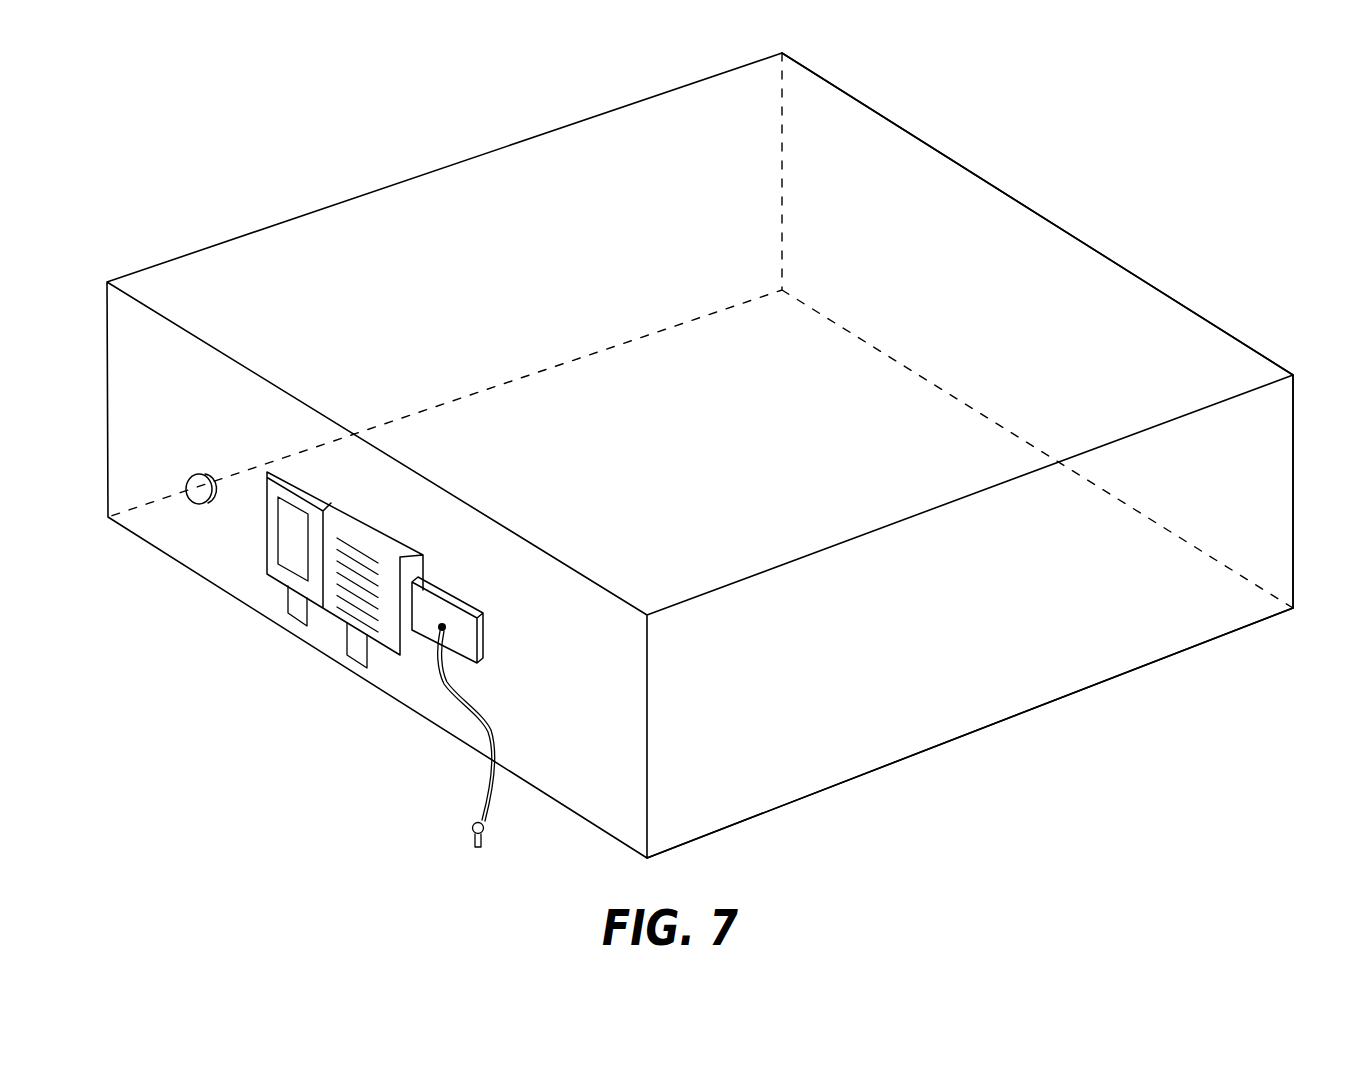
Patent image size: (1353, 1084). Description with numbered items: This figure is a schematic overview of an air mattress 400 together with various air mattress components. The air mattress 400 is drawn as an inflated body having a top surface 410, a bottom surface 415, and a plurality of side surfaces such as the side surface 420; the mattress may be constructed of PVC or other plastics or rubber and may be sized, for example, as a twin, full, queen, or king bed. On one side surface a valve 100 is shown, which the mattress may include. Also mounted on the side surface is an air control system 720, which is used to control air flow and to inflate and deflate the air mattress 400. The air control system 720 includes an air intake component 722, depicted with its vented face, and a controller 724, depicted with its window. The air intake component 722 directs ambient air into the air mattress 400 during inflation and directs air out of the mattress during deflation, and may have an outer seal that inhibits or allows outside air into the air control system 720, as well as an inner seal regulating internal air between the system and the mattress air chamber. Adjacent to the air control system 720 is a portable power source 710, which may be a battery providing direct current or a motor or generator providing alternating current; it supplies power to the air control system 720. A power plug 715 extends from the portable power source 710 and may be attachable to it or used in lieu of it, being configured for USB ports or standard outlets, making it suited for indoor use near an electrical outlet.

The valve 100 is at (208, 506).
The air mattress 400 is at (1205, 150).
The top surface 410 is at (857, 150).
The bottom surface 415 is at (900, 776).
The side surface 420 is at (1150, 585).
The portable power source 710 is at (487, 637).
The power plug 715 is at (494, 800).
The air control system 720 is at (407, 668).
The air intake component 722 is at (368, 682).
The controller 724 is at (307, 643).